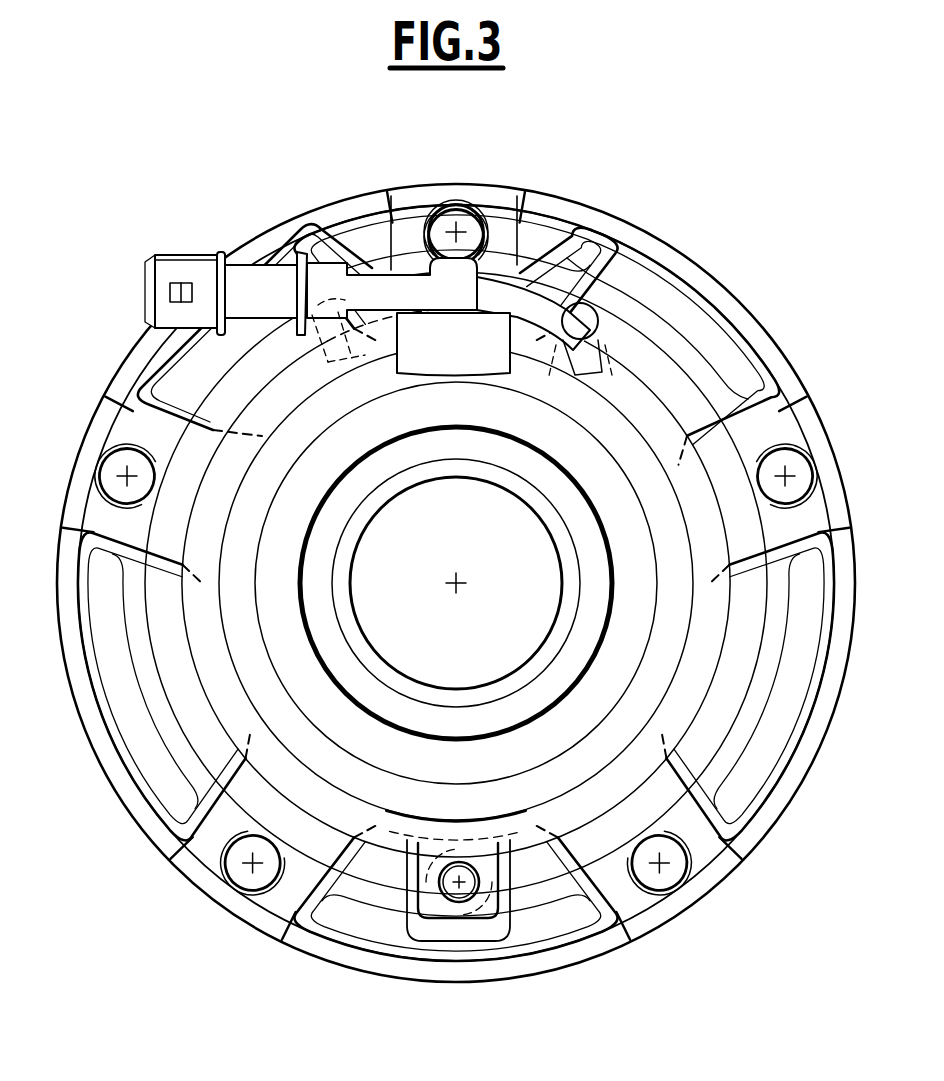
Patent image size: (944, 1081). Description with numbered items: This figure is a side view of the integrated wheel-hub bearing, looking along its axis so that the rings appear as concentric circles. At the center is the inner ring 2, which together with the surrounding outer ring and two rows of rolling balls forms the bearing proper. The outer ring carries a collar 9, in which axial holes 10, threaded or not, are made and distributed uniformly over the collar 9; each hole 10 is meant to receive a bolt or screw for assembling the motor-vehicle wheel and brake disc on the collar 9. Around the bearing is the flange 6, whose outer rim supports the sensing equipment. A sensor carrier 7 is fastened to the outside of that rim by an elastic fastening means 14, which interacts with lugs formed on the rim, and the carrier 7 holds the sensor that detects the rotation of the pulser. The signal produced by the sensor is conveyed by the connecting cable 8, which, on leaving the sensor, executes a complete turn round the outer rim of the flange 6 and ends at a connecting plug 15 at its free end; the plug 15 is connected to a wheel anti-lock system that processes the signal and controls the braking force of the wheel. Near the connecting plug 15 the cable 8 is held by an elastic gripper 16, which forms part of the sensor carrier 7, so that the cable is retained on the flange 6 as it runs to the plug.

The inner ring 2 is at (502, 450).
The flange 6 is at (653, 483).
The sensor carrier 7 is at (441, 350).
The connecting cable 8 is at (623, 363).
The collar 9 is at (358, 212).
The axial holes 10 is at (453, 205).
The elastic fastening means 14 is at (590, 332).
The connecting plug 15 is at (195, 268).
The elastic gripper 16 is at (465, 265).